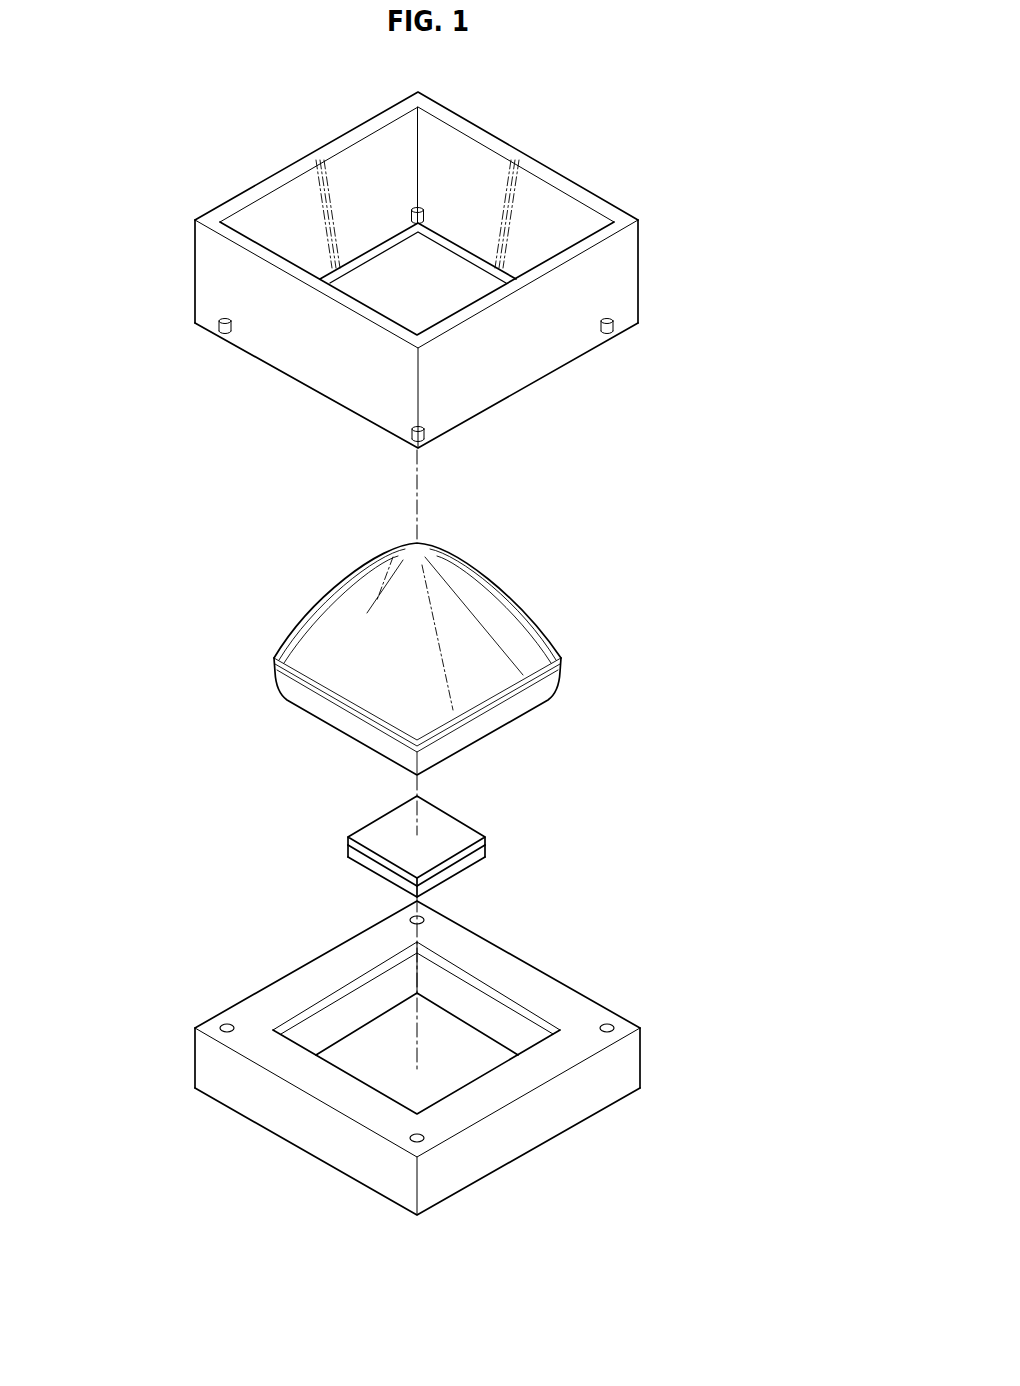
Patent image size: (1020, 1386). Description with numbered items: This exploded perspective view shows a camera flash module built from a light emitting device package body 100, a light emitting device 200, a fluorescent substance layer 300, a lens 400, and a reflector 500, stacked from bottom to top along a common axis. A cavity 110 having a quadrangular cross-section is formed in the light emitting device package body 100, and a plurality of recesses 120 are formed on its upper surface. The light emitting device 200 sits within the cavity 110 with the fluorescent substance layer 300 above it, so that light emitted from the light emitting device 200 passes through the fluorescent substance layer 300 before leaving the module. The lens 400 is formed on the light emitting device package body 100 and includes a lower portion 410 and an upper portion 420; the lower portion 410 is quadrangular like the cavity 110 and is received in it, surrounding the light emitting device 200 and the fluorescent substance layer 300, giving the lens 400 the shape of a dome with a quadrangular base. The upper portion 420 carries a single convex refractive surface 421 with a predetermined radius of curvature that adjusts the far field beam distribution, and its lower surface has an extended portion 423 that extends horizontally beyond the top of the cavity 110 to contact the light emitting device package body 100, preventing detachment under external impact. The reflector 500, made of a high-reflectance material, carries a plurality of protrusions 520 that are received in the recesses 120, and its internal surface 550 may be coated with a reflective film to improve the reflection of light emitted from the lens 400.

The light emitting device package body 100 is at (476, 1058).
The cavity 110 is at (378, 1067).
The recesses 120 is at (610, 1024).
The light emitting device 200 is at (465, 865).
The fluorescent substance layer 300 is at (468, 832).
The lens 400 is at (444, 636).
The lower portion 410 is at (416, 716).
The upper portion 420 is at (425, 603).
The refractive surface 421 is at (378, 553).
The extended portion 423 is at (345, 707).
The reflector 500 is at (372, 268).
The protrusions 520 is at (218, 330).
The internal surface 550 is at (463, 190).